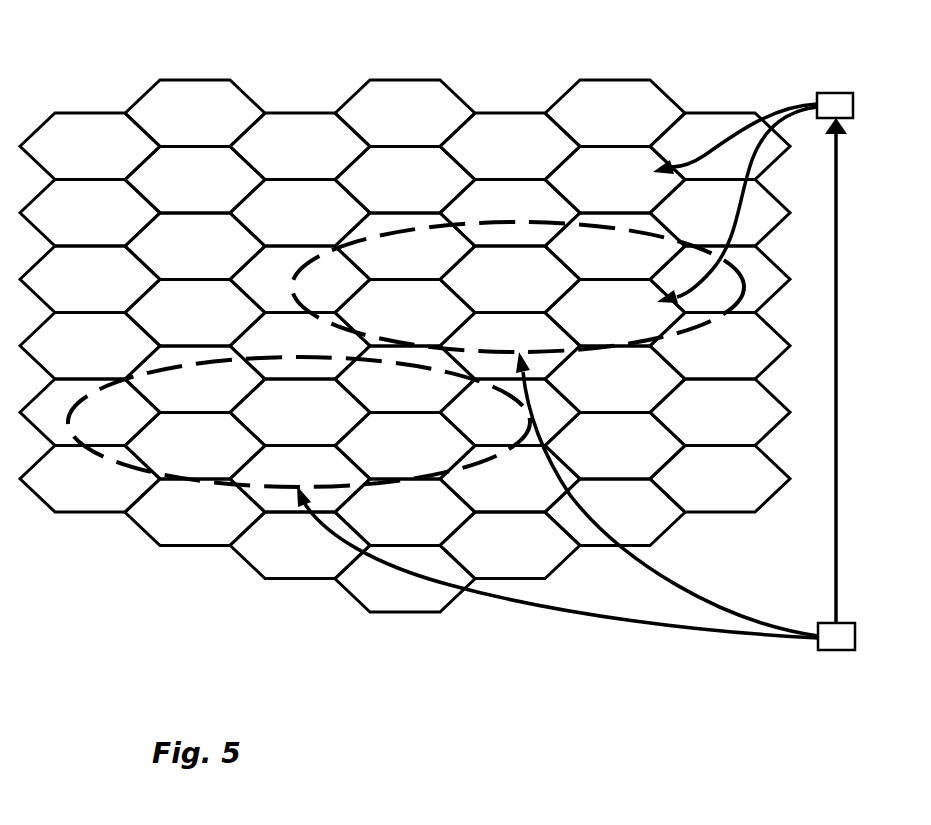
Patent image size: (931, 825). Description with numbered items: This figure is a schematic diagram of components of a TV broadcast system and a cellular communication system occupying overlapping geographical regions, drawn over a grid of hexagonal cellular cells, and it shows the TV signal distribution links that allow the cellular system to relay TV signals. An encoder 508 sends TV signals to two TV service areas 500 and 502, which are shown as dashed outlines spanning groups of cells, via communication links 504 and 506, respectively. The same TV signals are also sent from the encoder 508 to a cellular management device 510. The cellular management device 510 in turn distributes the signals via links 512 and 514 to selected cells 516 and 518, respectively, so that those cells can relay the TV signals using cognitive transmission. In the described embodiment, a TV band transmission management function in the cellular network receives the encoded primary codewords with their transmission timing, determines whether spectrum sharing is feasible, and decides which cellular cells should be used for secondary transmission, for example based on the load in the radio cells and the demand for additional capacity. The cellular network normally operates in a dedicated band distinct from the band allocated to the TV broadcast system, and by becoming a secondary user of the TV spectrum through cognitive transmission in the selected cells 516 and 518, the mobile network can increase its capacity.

The TV service area 500 is at (134, 464).
The TV service area 502 is at (489, 225).
The communication link 504 is at (530, 610).
The communication link 506 is at (705, 610).
The encoder 508 is at (830, 650).
The cellular management device 510 is at (827, 93).
The link 512 is at (750, 120).
The link 514 is at (778, 118).
The selected cell 516 is at (638, 186).
The selected cell 518 is at (638, 318).